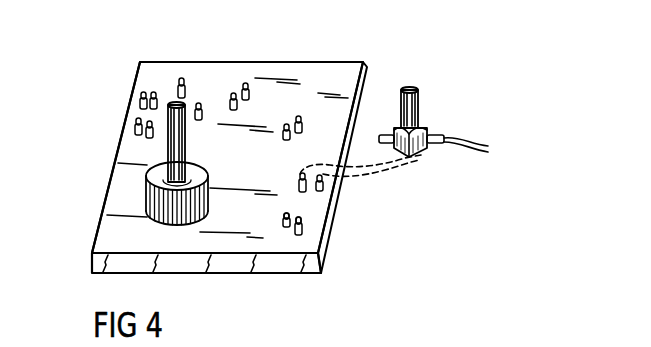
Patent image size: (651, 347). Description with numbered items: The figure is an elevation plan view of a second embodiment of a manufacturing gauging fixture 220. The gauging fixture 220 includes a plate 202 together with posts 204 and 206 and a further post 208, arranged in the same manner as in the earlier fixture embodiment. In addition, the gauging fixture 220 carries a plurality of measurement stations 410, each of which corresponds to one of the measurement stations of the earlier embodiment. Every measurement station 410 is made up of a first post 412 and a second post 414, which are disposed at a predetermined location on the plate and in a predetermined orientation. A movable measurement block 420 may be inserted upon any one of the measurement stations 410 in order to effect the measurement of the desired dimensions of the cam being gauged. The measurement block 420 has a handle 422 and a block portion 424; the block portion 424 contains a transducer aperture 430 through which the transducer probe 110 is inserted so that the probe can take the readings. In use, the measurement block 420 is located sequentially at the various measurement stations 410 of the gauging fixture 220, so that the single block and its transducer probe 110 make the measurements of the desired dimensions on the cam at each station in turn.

The transducer probe 110 is at (440, 133).
The plate 202 is at (115, 241).
The post 204 is at (173, 204).
The post 206 is at (227, 158).
The post 208 is at (199, 103).
The gauging fixture 220 is at (110, 169).
The measurement stations 410 is at (143, 91).
The first post 412 is at (285, 228).
The second post 414 is at (299, 238).
The movable measurement block 420 is at (467, 104).
The handle 422 is at (401, 118).
The block portion 424 is at (422, 153).
The transducer aperture 430 is at (385, 136).